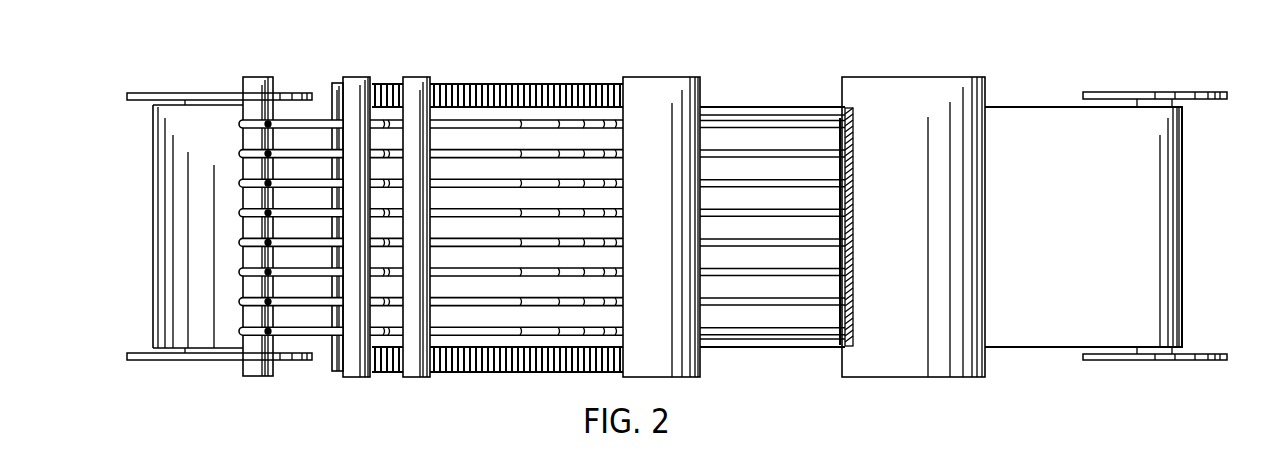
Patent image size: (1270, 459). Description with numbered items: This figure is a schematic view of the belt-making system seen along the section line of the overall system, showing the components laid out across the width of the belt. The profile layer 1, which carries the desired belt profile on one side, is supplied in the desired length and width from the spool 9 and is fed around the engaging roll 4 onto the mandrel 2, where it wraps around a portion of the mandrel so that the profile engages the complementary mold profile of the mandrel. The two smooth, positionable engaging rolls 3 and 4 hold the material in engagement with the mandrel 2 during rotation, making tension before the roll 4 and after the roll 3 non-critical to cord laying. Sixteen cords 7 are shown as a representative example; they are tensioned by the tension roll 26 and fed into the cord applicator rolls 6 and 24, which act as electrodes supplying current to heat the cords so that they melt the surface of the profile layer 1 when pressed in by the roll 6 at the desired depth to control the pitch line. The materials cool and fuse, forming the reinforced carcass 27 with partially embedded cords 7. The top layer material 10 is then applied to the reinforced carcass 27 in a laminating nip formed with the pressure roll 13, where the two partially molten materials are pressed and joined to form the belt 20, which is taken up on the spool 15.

The profile layer 1 is at (287, 342).
The mandrel 2 is at (527, 88).
The engaging roll 3 is at (650, 80).
The engaging roll 4 is at (338, 90).
The cord applicator roll 6 is at (417, 82).
The cords 7 is at (317, 152).
The spool 9 is at (175, 358).
The top layer material 10 is at (840, 113).
The pressure roll 13 is at (908, 85).
The spool 15 is at (1113, 358).
The belt 20 is at (1058, 113).
The cord applicator roll 24 is at (358, 82).
The tension roll 26 is at (257, 82).
The reinforced carcass 27 is at (795, 112).